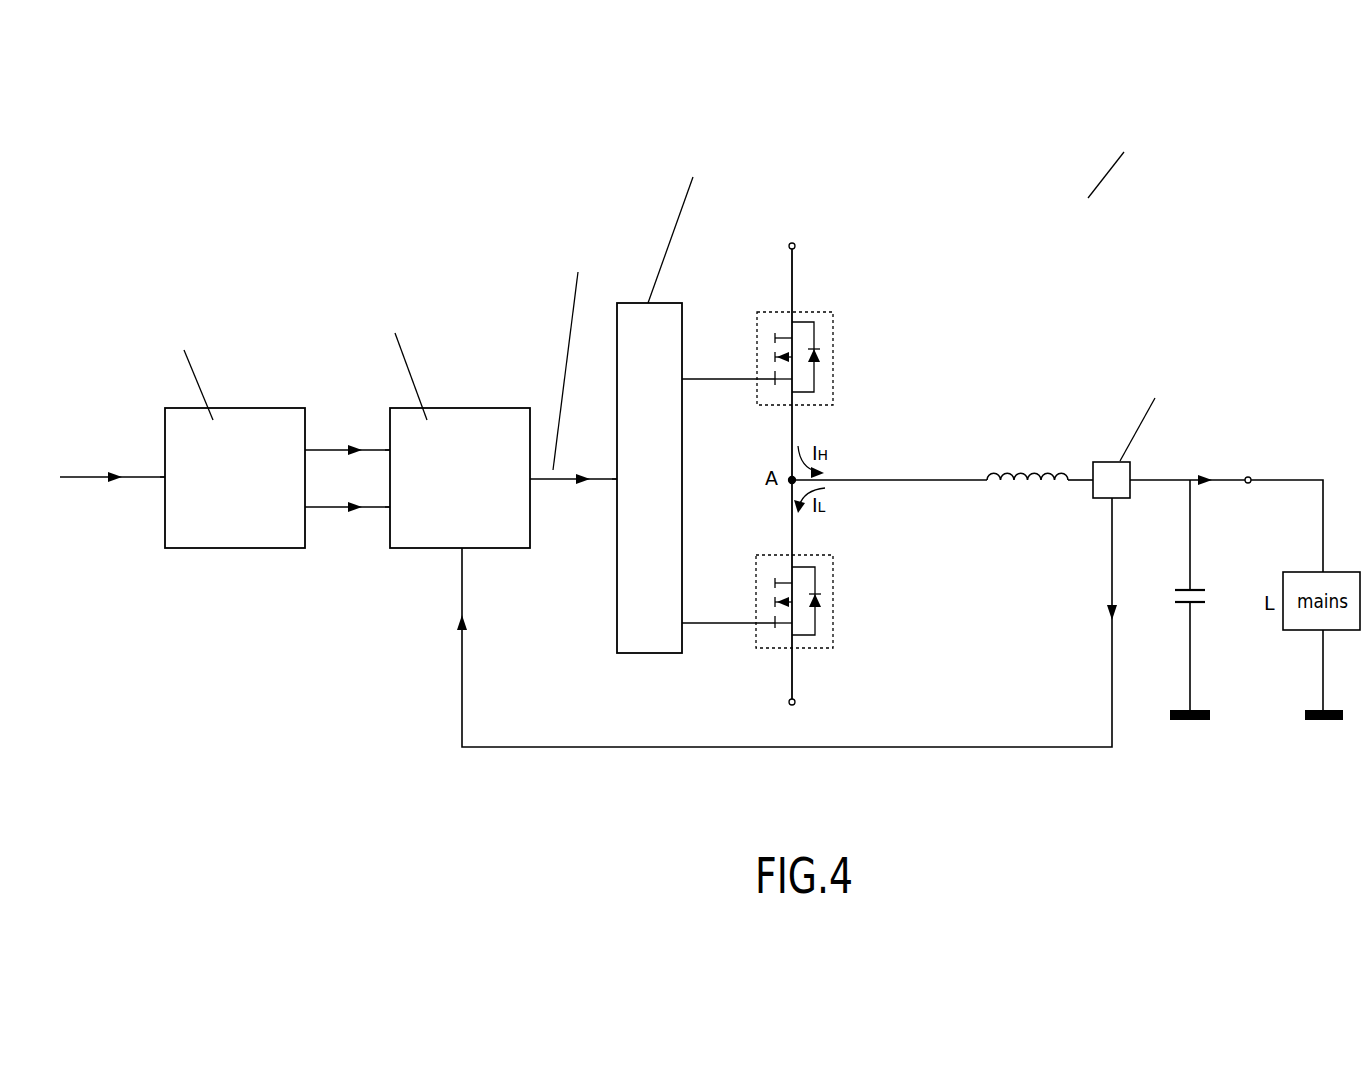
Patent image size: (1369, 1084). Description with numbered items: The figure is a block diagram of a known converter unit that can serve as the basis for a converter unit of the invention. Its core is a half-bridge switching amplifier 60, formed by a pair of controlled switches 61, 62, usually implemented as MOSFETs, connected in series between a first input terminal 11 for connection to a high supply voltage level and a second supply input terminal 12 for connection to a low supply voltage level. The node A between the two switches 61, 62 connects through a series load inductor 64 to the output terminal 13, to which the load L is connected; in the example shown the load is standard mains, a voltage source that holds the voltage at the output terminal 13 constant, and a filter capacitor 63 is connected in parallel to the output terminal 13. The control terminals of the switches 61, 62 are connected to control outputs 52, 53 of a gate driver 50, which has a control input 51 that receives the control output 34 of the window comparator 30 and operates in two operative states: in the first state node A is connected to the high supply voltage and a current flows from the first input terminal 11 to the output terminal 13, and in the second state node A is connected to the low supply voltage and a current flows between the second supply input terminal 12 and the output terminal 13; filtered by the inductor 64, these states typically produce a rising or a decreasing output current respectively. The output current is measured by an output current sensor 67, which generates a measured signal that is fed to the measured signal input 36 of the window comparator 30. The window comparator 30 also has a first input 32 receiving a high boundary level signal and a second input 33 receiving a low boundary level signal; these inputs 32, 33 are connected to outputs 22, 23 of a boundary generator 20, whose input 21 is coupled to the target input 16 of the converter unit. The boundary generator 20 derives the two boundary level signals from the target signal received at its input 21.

The target input 16 is at (96, 468).
The boundary generator 20 is at (224, 421).
The input 21 is at (177, 478).
The output 22 is at (331, 440).
The output 23 is at (331, 497).
The window comparator 30 is at (446, 410).
The first input 32 is at (402, 448).
The second input 33 is at (402, 505).
The control output 34 is at (558, 355).
The measured signal input 36 is at (799, 622).
The gate driver 50 is at (662, 387).
The switch driver control input 51 is at (629, 478).
The control output 52 is at (715, 383).
The control output 53 is at (715, 623).
The half-bridge switching amplifier 60 is at (1045, 240).
The first input terminal 11 is at (777, 245).
The second supply input terminal 12 is at (777, 701).
The controlled switch 61 is at (850, 317).
The controlled switch 62 is at (850, 563).
The load inductor 64 is at (1020, 472).
The output current sensor 67 is at (1131, 419).
The filter capacitor 63 is at (1195, 600).
The output terminal 13 is at (1195, 479).